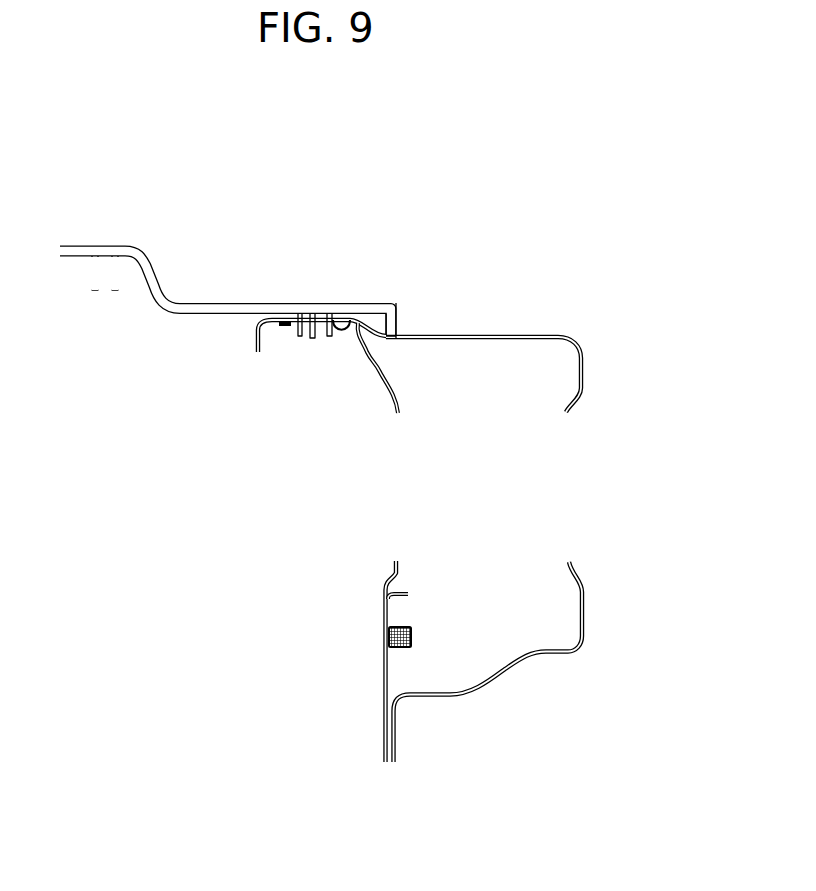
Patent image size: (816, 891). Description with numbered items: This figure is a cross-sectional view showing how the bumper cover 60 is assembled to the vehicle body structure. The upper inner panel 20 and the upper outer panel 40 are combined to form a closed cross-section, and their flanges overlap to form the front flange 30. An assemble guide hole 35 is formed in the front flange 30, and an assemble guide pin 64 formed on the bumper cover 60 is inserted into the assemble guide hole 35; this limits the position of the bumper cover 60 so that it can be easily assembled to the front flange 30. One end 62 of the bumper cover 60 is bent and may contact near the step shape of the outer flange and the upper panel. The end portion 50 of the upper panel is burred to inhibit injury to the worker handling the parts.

The upper inner panel 20 is at (366, 653).
The front flange 30 is at (277, 346).
The assemble guide hole 35 is at (348, 321).
The upper outer panel 40 is at (602, 358).
The end portion 50 is at (252, 344).
The bumper cover 60 is at (193, 303).
The end of bumper cover 62 is at (398, 320).
The assemble guide pin 64 is at (305, 338).